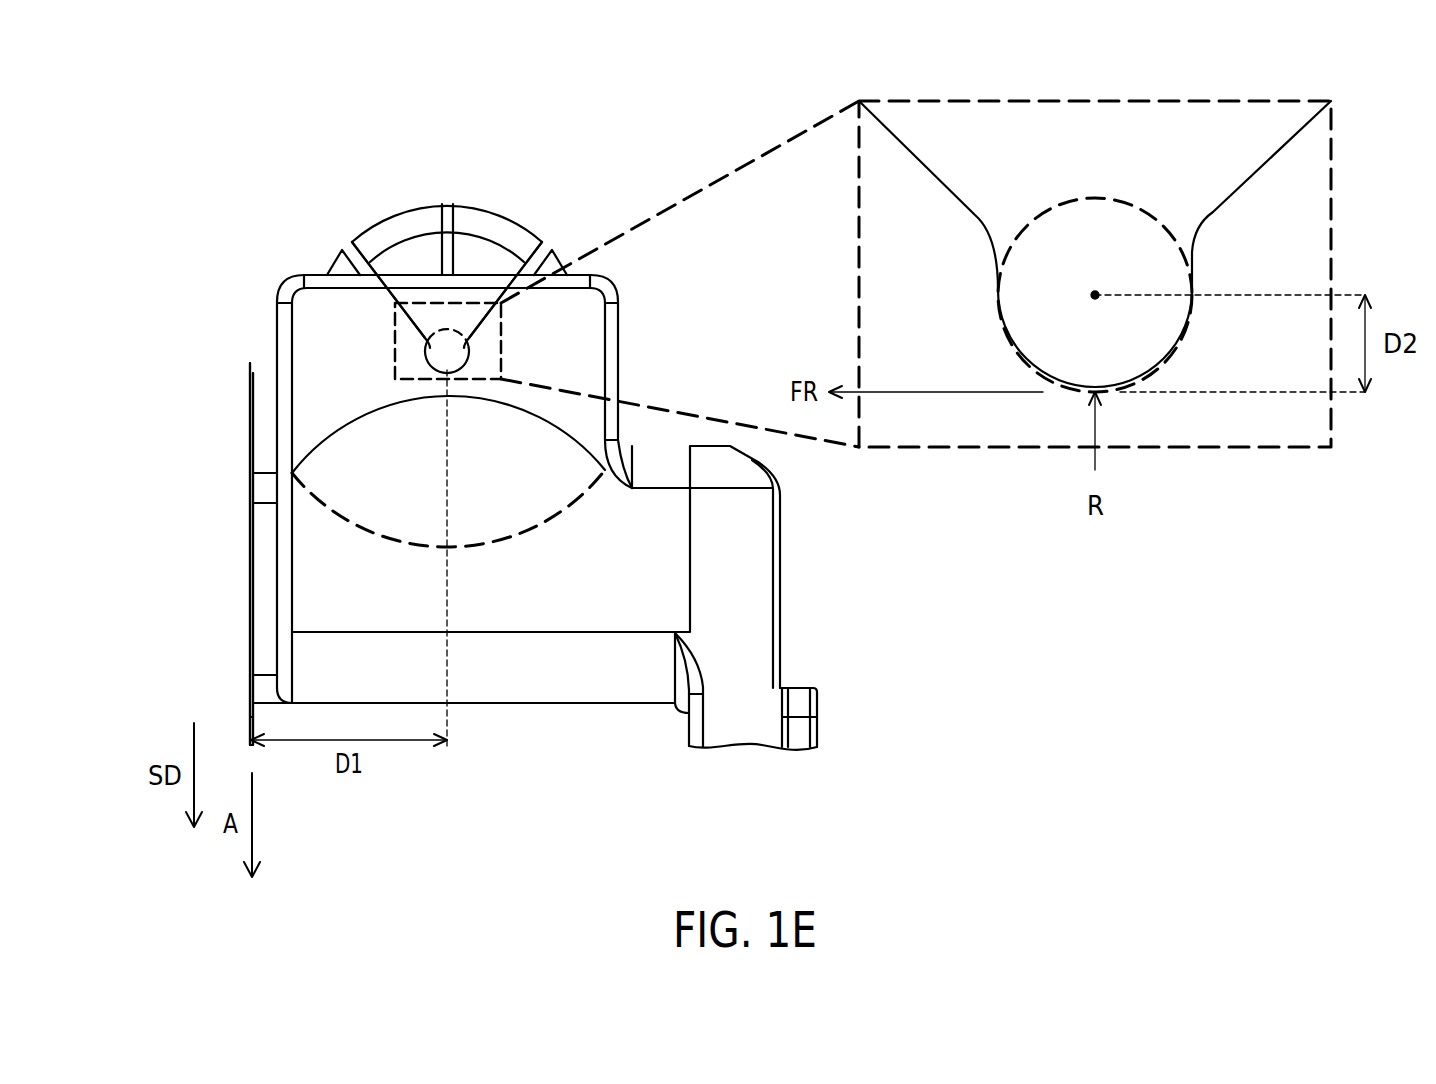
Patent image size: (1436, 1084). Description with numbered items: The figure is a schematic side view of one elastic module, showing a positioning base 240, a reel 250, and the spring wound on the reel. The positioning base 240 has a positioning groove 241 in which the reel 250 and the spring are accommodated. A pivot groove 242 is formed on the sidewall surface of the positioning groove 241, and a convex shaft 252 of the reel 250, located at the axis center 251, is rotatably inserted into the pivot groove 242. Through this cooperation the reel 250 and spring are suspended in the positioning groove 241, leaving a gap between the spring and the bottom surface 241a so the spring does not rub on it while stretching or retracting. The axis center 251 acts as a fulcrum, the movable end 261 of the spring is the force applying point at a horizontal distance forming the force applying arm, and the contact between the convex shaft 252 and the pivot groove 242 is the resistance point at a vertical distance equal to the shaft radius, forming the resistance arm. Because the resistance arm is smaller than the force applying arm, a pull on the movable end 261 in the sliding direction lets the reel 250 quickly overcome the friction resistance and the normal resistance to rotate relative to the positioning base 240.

The positioning base 240 is at (742, 611).
The positioning groove 241 is at (343, 568).
The bottom surface of the positioning groove 241a is at (625, 630).
The pivot groove 242 is at (437, 313).
The reel 250 is at (450, 178).
The axis center 251 is at (1097, 293).
The convex shaft 252 is at (1107, 230).
The movable end 261 is at (252, 619).